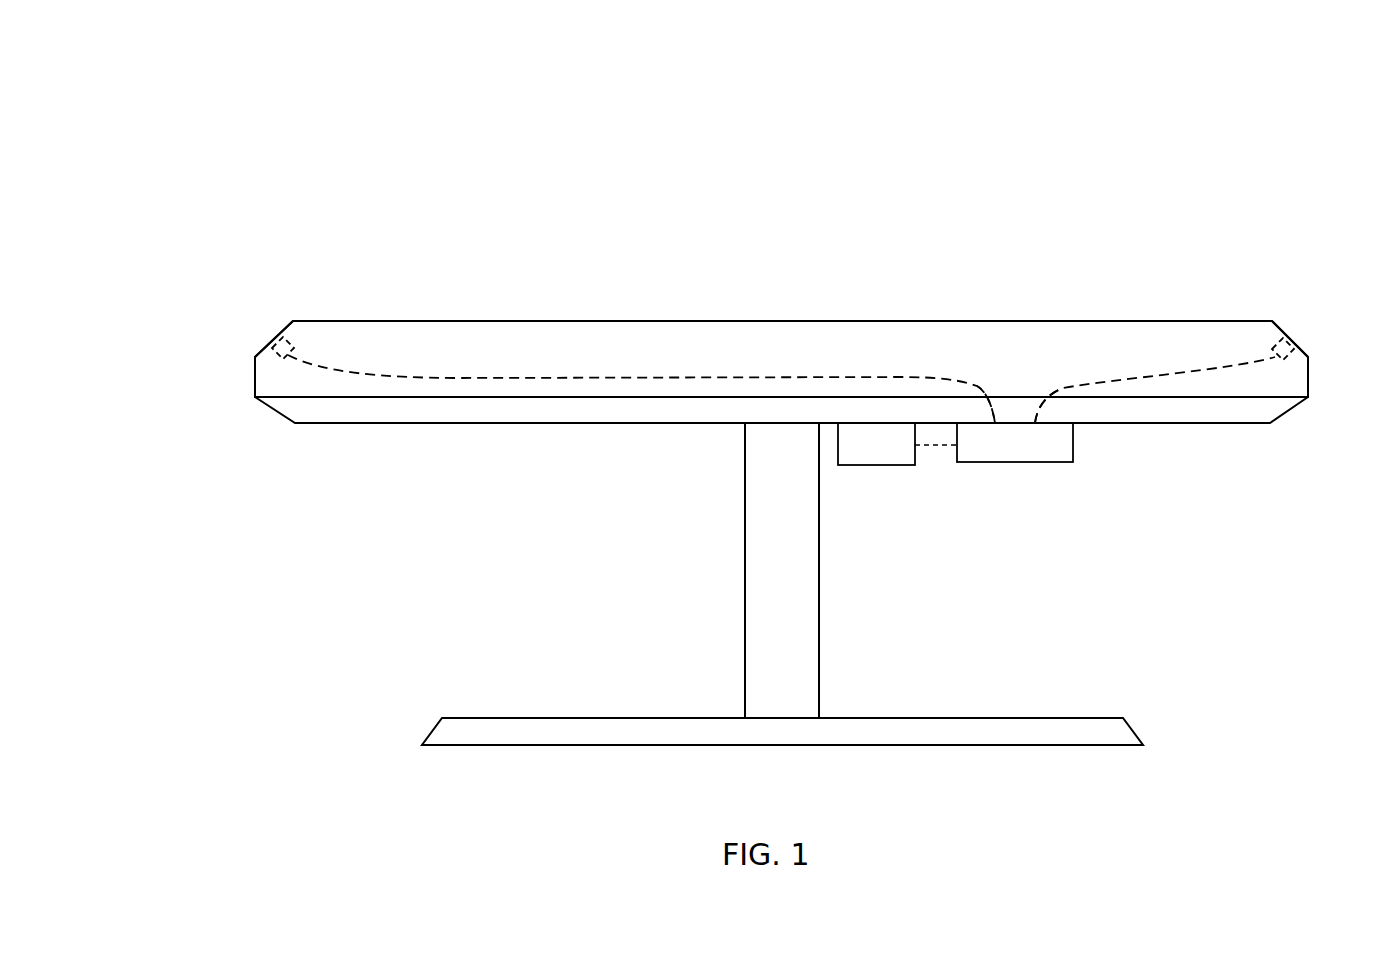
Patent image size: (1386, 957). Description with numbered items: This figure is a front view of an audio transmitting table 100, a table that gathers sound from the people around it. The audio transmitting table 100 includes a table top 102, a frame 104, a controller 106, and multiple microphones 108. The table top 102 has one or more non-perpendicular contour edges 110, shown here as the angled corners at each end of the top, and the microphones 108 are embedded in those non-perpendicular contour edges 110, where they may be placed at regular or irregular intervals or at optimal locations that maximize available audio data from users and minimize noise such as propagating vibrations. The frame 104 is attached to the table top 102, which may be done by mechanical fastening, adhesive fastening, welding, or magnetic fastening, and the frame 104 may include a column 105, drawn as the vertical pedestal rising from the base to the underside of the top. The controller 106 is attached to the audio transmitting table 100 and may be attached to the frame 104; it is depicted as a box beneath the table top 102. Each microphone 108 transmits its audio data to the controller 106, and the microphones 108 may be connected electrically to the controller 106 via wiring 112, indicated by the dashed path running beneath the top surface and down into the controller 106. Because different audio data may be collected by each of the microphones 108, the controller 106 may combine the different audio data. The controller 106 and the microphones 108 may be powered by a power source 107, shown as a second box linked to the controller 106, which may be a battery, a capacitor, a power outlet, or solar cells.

The audio transmitting table 100 is at (352, 102).
The table top 102 is at (774, 359).
The frame 104 is at (745, 567).
The column 105 is at (810, 570).
The controller 106 is at (1040, 456).
The power source 107 is at (900, 456).
The microphones 108 is at (288, 342).
The non-perpendicular contour edges 110 is at (250, 345).
The wiring 112 is at (1067, 385).